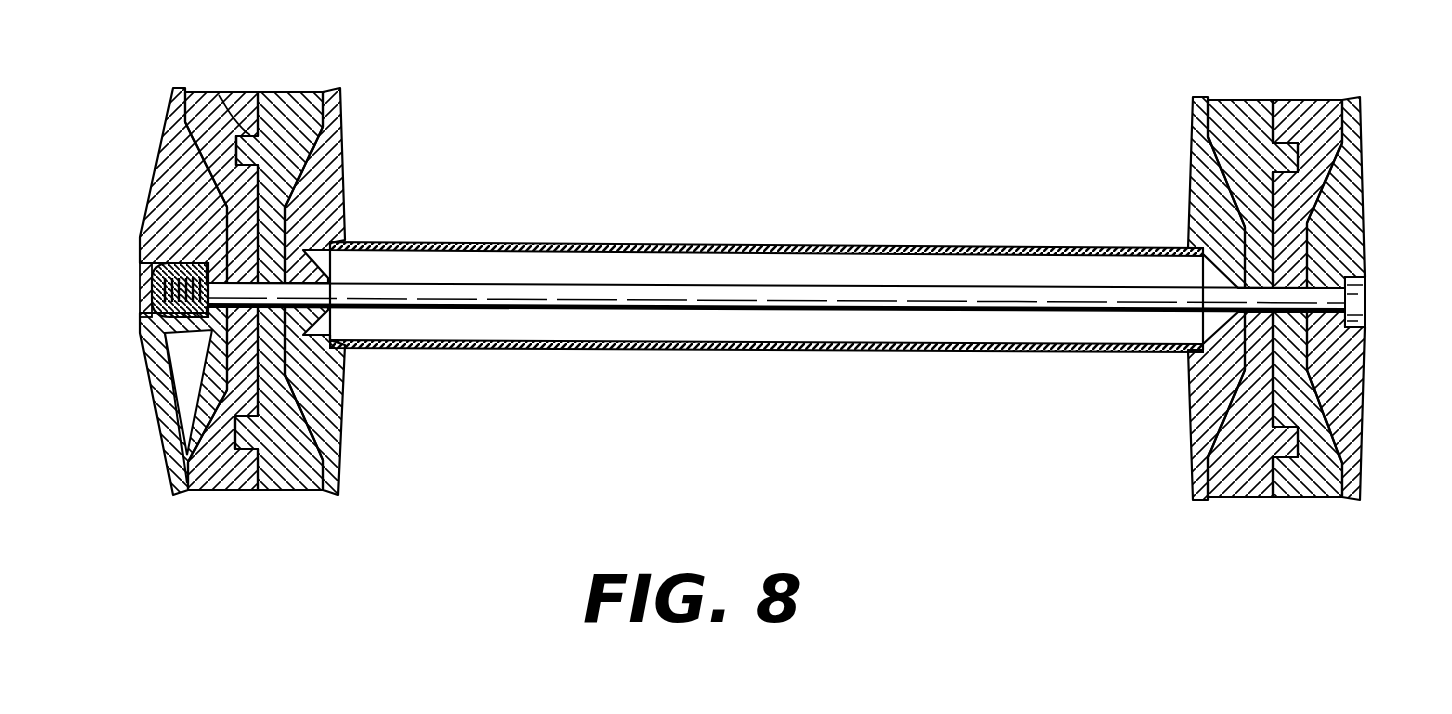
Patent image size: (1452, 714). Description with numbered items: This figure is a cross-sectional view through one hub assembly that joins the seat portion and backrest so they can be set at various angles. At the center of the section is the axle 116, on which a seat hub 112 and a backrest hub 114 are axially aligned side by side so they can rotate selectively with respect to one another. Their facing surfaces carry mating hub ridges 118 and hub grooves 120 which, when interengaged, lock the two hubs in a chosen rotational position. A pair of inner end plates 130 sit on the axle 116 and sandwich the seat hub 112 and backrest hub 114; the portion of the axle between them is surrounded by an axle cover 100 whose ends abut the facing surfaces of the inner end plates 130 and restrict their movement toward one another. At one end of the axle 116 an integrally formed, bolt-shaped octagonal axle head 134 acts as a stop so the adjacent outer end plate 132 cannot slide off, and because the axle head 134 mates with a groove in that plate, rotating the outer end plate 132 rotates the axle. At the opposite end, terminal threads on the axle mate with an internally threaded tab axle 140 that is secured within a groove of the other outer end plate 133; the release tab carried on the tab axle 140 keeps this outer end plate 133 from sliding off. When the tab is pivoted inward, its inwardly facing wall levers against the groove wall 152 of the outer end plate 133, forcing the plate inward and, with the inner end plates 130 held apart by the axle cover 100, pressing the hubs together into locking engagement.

The axle cover 100 is at (797, 247).
The seat hub 112 is at (226, 484).
The backrest hub 114 is at (290, 484).
The axle 116 is at (612, 297).
The hub ridges 118 is at (262, 148).
The hub grooves 120 is at (220, 93).
The inner end plates 130 is at (344, 148).
The outer end plate 132 is at (1362, 143).
The outer end plate 133 is at (153, 157).
The axle head 134 is at (1367, 300).
The tab axle 140 is at (140, 270).
The groove wall 152 is at (163, 338).